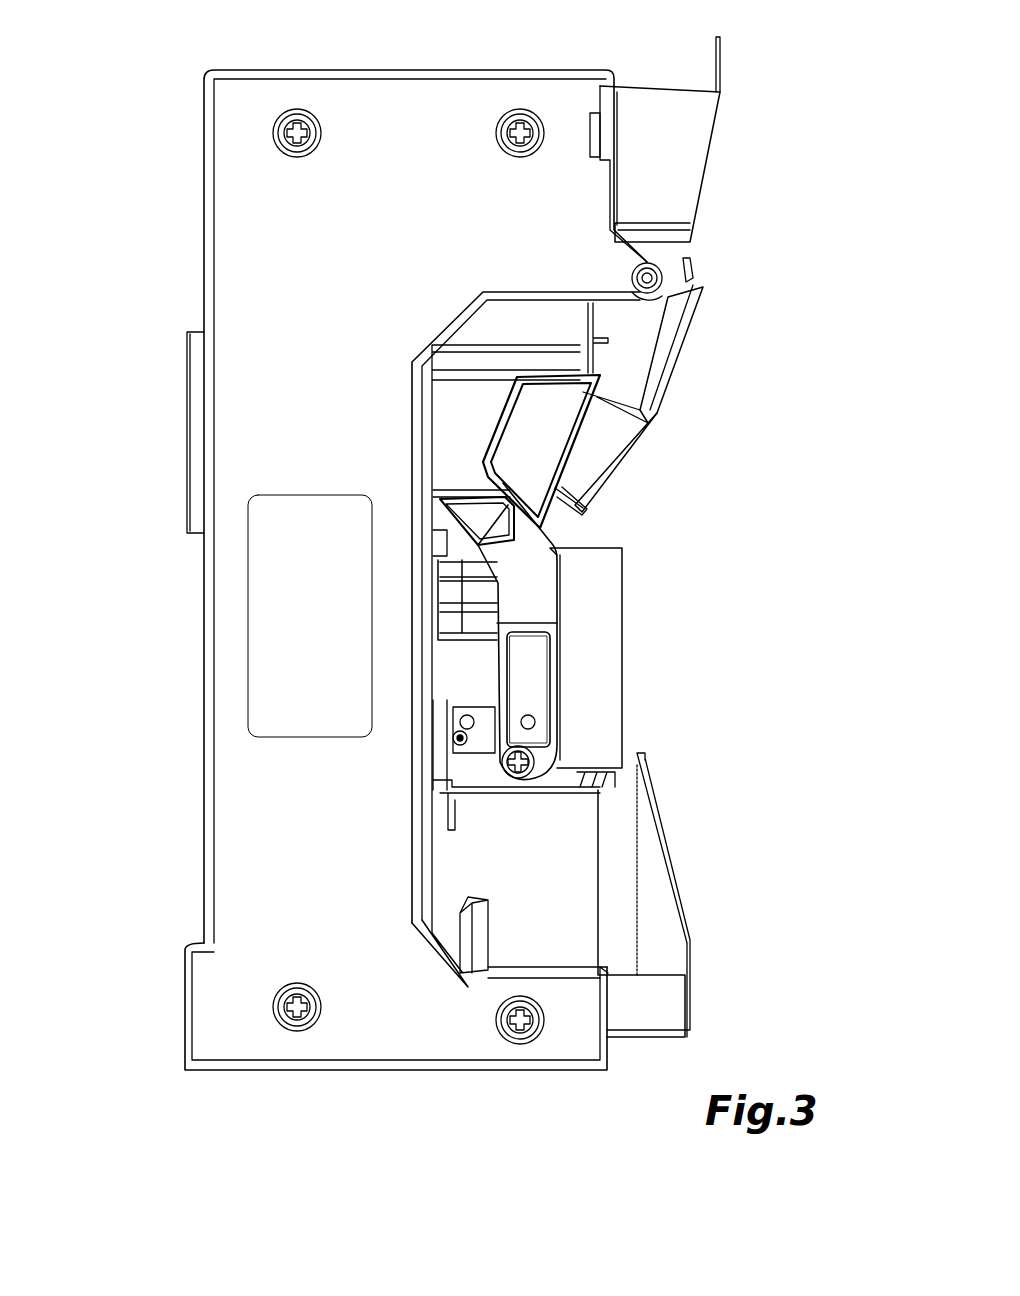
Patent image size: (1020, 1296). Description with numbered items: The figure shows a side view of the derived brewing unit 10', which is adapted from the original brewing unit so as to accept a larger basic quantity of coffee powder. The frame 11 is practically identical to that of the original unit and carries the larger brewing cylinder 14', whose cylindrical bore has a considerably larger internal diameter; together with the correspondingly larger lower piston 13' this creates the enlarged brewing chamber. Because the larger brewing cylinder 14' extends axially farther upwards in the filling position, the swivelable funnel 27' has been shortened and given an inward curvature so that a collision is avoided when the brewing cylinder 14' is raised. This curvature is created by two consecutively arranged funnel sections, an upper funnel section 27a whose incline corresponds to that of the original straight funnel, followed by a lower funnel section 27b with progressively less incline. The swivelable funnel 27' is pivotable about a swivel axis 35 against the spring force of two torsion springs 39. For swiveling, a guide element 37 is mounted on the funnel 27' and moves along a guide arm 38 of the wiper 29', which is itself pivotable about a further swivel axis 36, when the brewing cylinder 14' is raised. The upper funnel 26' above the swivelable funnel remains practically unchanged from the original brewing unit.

The brewing unit 10' is at (118, 125).
The frame 11 is at (414, 230).
The lower piston 13' is at (687, 895).
The brewing cylinder 14' is at (668, 658).
The upper funnel 26' is at (710, 149).
The swivelable funnel 27' is at (640, 636).
The upper funnel section 27a is at (668, 363).
The lower funnel section 27b is at (618, 472).
The wiper 29' is at (612, 636).
The swivel axis 35 is at (648, 277).
The swivel axis 36 is at (530, 757).
The guide element 37 is at (520, 455).
The guide arm 38 is at (515, 510).
The torsion springs 39 is at (663, 303).